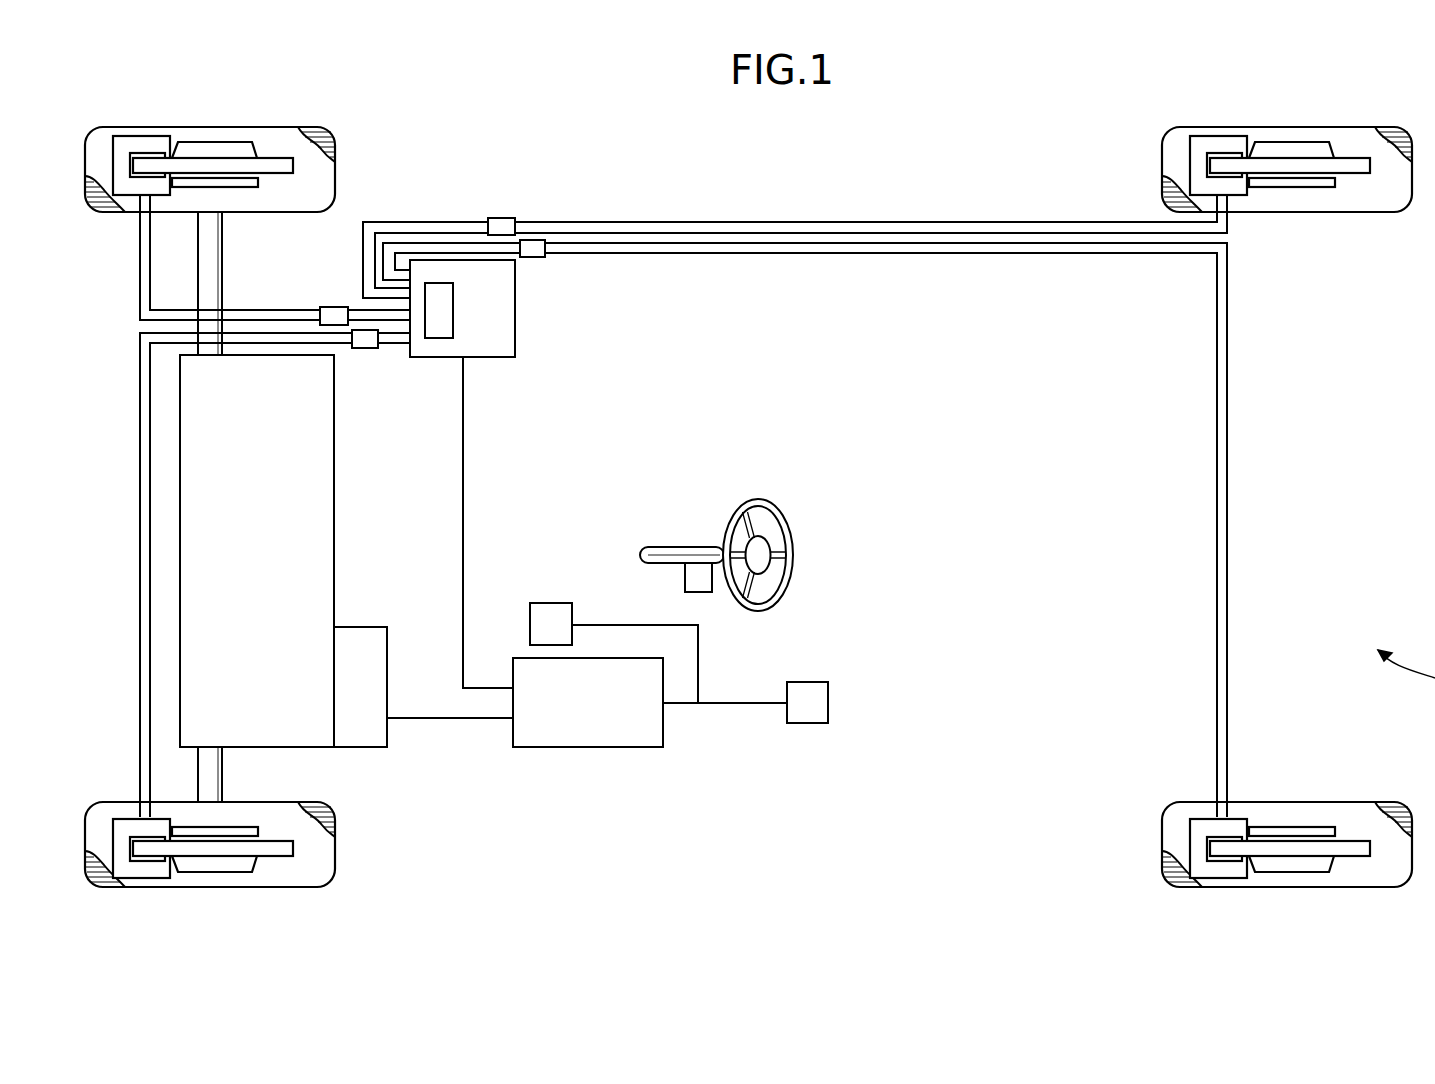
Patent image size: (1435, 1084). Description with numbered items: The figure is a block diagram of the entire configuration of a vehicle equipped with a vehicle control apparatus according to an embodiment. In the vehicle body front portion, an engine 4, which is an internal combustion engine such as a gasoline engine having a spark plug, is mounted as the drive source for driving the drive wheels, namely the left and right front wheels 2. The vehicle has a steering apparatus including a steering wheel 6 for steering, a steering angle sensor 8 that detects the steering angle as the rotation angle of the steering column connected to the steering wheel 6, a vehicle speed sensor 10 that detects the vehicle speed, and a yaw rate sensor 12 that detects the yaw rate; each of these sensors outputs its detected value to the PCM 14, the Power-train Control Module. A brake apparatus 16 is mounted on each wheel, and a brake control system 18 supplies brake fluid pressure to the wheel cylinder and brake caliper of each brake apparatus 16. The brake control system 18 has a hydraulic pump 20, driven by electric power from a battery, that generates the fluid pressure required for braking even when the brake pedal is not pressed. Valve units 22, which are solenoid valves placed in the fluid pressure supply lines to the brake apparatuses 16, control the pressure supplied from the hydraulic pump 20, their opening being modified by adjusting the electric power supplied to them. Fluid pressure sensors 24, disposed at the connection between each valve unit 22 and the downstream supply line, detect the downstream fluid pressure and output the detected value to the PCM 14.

The front wheels 2 is at (291, 127).
The engine 4 is at (334, 550).
The steering wheel 6 is at (758, 499).
The steering angle sensor 8 is at (685, 580).
The vehicle speed sensor 10 is at (553, 603).
The yaw rate sensor 12 is at (801, 682).
The PCM (Power-train Control Module) 14 is at (587, 747).
The brake apparatus 16 is at (146, 136).
The brake control system 18 is at (515, 342).
The hydraulic pump 20 is at (453, 310).
The valve units 22 is at (532, 240).
The fluid pressure sensors 24 is at (364, 330).